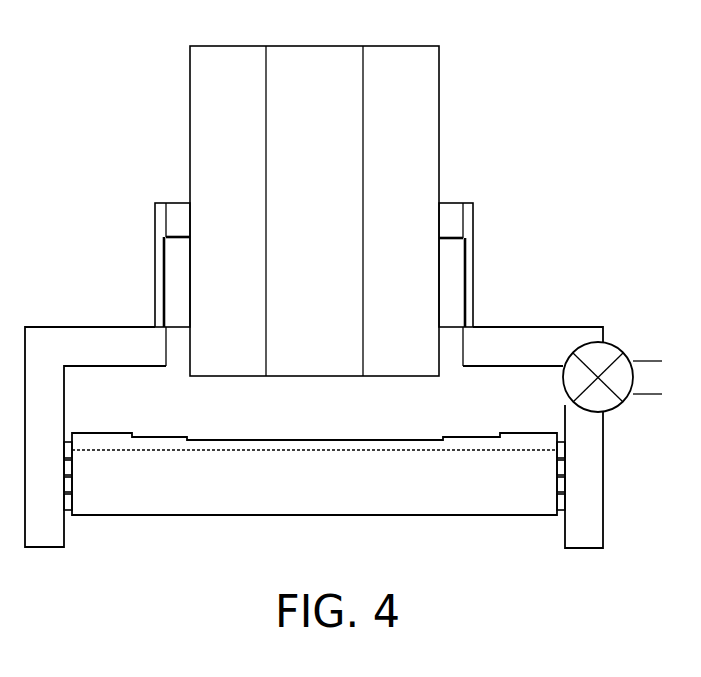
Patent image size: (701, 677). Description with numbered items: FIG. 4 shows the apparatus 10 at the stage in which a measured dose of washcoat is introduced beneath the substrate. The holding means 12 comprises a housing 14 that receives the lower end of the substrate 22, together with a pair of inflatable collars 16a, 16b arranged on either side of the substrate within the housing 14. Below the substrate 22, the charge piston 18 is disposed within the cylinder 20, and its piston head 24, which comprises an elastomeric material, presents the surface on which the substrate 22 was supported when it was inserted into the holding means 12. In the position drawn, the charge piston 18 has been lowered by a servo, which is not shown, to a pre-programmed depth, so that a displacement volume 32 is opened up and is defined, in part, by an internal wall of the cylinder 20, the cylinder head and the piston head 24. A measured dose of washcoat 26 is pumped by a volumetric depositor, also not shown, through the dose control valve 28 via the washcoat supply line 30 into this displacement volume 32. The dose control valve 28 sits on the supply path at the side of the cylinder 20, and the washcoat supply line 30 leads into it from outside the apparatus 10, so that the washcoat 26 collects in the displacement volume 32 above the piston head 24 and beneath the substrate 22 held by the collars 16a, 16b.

The apparatus 10 is at (522, 98).
The holding means 12 is at (473, 262).
The housing 14 is at (155, 253).
The inflatable collar 16a is at (173, 210).
The inflatable collar 16b is at (173, 331).
The charge piston 18 is at (175, 502).
The cylinder 20 is at (593, 508).
The substrate 22 is at (325, 125).
The piston head 24 is at (418, 441).
The washcoat 26 is at (363, 427).
The dose control valve 28 is at (607, 352).
The washcoat supply line 30 is at (648, 386).
The displacement volume 32 is at (325, 420).